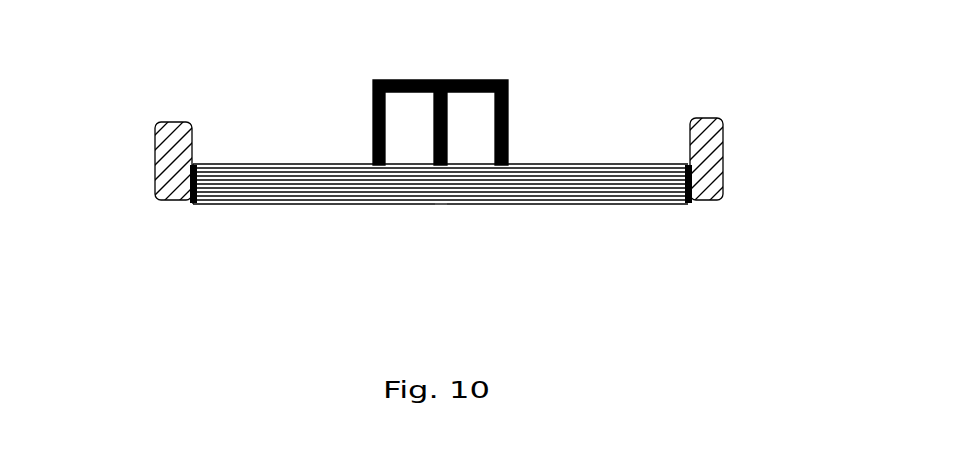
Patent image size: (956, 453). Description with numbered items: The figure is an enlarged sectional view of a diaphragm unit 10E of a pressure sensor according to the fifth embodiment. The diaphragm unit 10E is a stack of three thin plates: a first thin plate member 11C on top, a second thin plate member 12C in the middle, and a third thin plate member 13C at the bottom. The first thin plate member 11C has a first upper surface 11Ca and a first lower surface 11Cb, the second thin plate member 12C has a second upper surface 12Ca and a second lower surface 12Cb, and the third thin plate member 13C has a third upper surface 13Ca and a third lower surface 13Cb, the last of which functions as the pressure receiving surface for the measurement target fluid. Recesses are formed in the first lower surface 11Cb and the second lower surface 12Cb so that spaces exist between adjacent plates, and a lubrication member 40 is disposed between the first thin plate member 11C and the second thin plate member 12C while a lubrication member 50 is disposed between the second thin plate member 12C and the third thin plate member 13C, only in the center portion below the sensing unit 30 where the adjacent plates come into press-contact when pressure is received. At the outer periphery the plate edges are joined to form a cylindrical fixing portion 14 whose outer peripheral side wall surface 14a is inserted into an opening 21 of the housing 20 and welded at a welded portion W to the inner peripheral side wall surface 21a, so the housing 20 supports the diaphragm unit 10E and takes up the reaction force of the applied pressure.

The diaphragm unit 10E is at (433, 272).
The first thin plate member 11C is at (440, 166).
The first upper surface 11Ca is at (566, 162).
The first lower surface 11Cb is at (590, 163).
The second thin plate member 12C is at (440, 195).
The second upper surface 12Ca is at (556, 198).
The second lower surface 12Cb is at (650, 150).
The third thin plate member 13C is at (440, 238).
The third upper surface 13Ca is at (585, 203).
The third lower surface 13Cb is at (647, 203).
The fixing portion 14 is at (417, 213).
The outer peripheral side wall surface 14a is at (193, 167).
The housing 20 is at (172, 123).
The opening 21 is at (236, 130).
The inner peripheral side wall surface 21a is at (248, 96).
The sensing unit 30 is at (440, 79).
The lubrication member 40 is at (405, 205).
The lubrication member 50 is at (448, 205).
The welded portion W is at (187, 205).